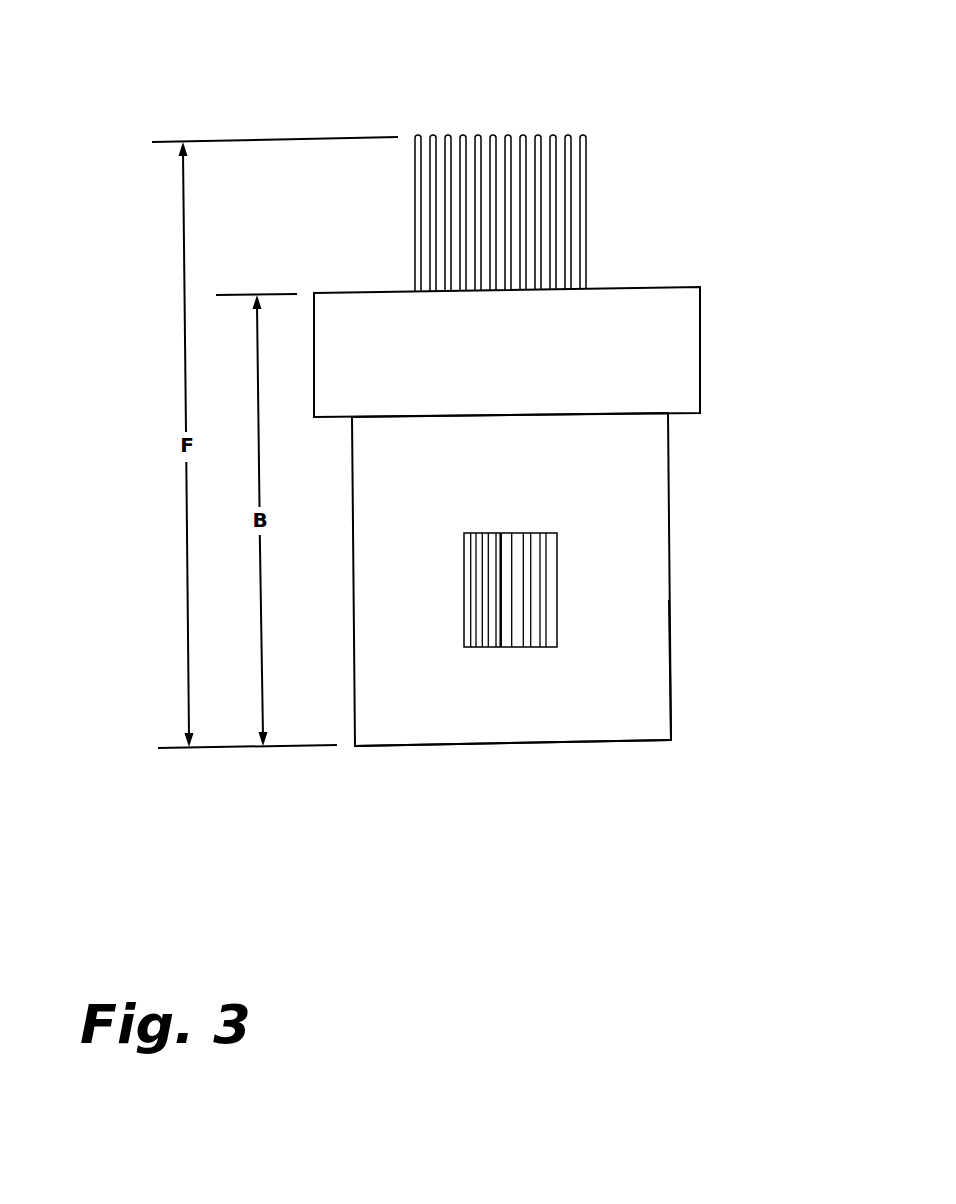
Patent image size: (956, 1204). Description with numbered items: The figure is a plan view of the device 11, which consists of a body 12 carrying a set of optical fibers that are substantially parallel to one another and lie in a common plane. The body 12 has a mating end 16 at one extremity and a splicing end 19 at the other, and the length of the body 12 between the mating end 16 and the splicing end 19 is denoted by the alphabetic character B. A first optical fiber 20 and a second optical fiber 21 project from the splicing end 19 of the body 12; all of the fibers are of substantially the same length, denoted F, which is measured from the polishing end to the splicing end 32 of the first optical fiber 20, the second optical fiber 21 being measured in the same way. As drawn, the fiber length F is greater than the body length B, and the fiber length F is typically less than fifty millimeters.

The device 11 is at (670, 598).
The body 12 is at (670, 692).
The mating end 16 is at (623, 742).
The splicing end 19 is at (676, 287).
The first optical fiber 20 is at (432, 135).
The second optical fiber 21 is at (445, 135).
The splicing end 32 is at (420, 135).